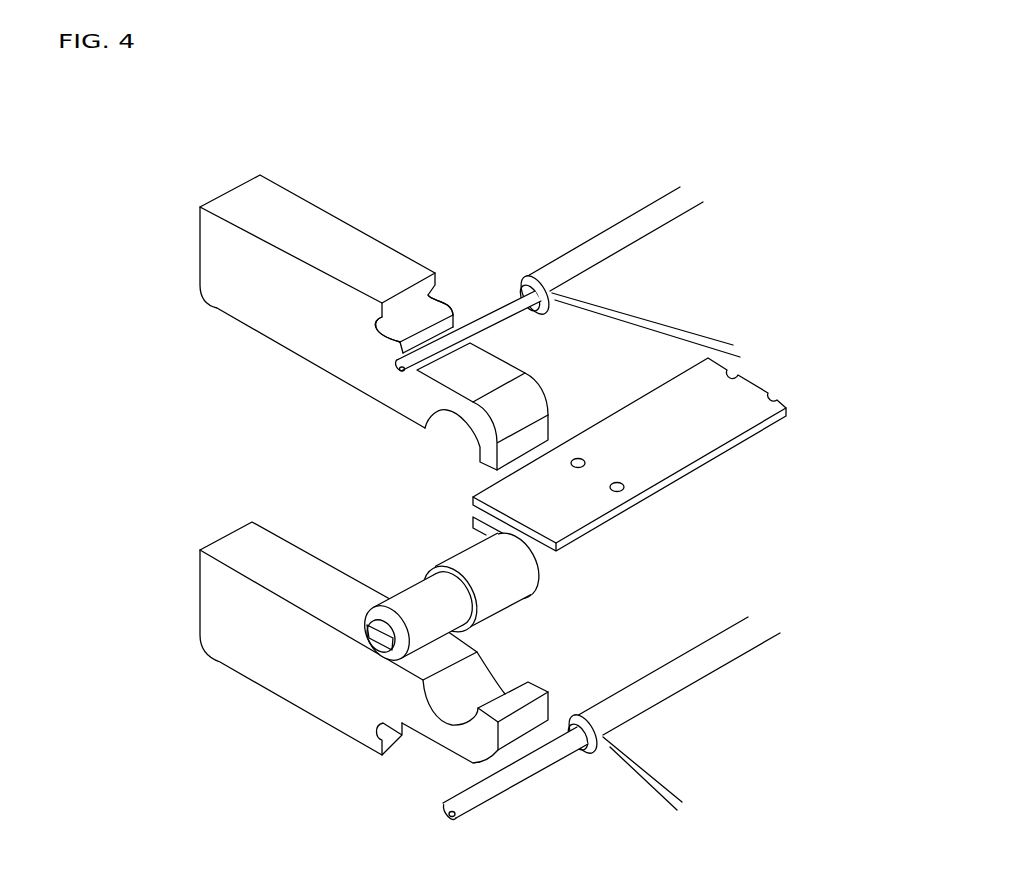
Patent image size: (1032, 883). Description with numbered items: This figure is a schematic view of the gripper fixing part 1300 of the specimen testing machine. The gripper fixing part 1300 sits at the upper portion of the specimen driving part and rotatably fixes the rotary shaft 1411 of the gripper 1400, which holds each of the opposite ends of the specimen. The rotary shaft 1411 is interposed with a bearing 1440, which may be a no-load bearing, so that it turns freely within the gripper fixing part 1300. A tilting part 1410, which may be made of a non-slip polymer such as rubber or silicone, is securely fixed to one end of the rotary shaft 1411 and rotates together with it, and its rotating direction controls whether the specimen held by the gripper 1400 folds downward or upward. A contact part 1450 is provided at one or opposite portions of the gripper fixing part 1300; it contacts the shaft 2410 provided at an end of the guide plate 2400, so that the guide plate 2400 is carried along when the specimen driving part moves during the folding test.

The gripper fixing part 1300 is at (217, 595).
The contact part 1450 is at (398, 322).
The gripper 1400 is at (728, 405).
The tilting part 1410 is at (408, 600).
The rotary shaft 1411 is at (377, 638).
The bearing 1440 is at (502, 587).
The guide plate 2400 is at (630, 272).
The shaft 2410 is at (491, 312).